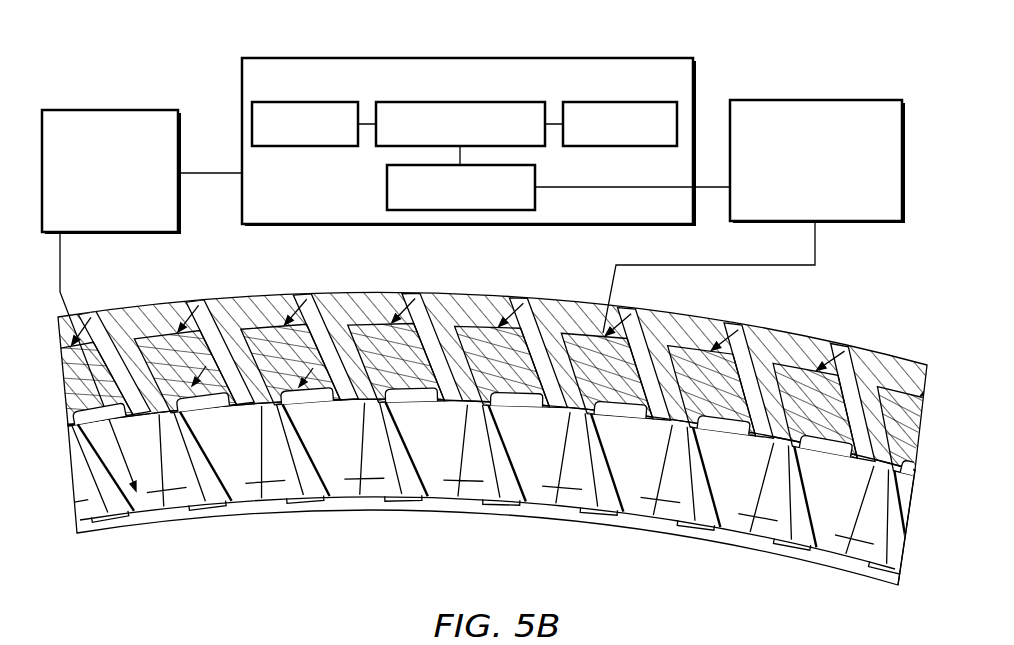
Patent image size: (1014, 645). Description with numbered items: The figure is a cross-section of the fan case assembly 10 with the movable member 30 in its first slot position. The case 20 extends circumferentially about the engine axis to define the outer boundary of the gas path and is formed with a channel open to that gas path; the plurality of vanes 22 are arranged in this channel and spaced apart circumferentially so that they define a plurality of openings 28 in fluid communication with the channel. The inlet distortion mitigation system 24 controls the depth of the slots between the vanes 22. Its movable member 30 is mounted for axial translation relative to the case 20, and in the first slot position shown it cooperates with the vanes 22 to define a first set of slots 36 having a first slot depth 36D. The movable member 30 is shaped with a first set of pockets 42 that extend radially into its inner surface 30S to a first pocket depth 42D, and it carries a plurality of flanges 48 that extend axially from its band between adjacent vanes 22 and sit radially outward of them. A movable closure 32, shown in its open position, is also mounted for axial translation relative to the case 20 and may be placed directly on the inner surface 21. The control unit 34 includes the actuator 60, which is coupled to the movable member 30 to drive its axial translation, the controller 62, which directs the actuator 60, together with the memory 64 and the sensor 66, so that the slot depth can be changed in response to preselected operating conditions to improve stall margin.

The fan case assembly 10 is at (514, 322).
The case 20 is at (878, 335).
The inner surface 21 is at (842, 572).
The vanes 22 is at (288, 522).
The inlet distortion mitigation system 24 is at (514, 322).
The openings 28 is at (565, 535).
The movable member 30 is at (803, 100).
The inner surface 30S is at (603, 430).
The movable closure 32 is at (111, 110).
The control unit 34 is at (444, 112).
The first set of slots 36 is at (337, 512).
The first slot depth 36D is at (313, 368).
The first set of pockets 42 is at (240, 372).
The first pocket depth 42D is at (203, 365).
The flanges 48 is at (605, 334).
The actuator 60 is at (386, 182).
The controller 62 is at (378, 104).
The memory 64 is at (620, 102).
The sensor 66 is at (252, 125).